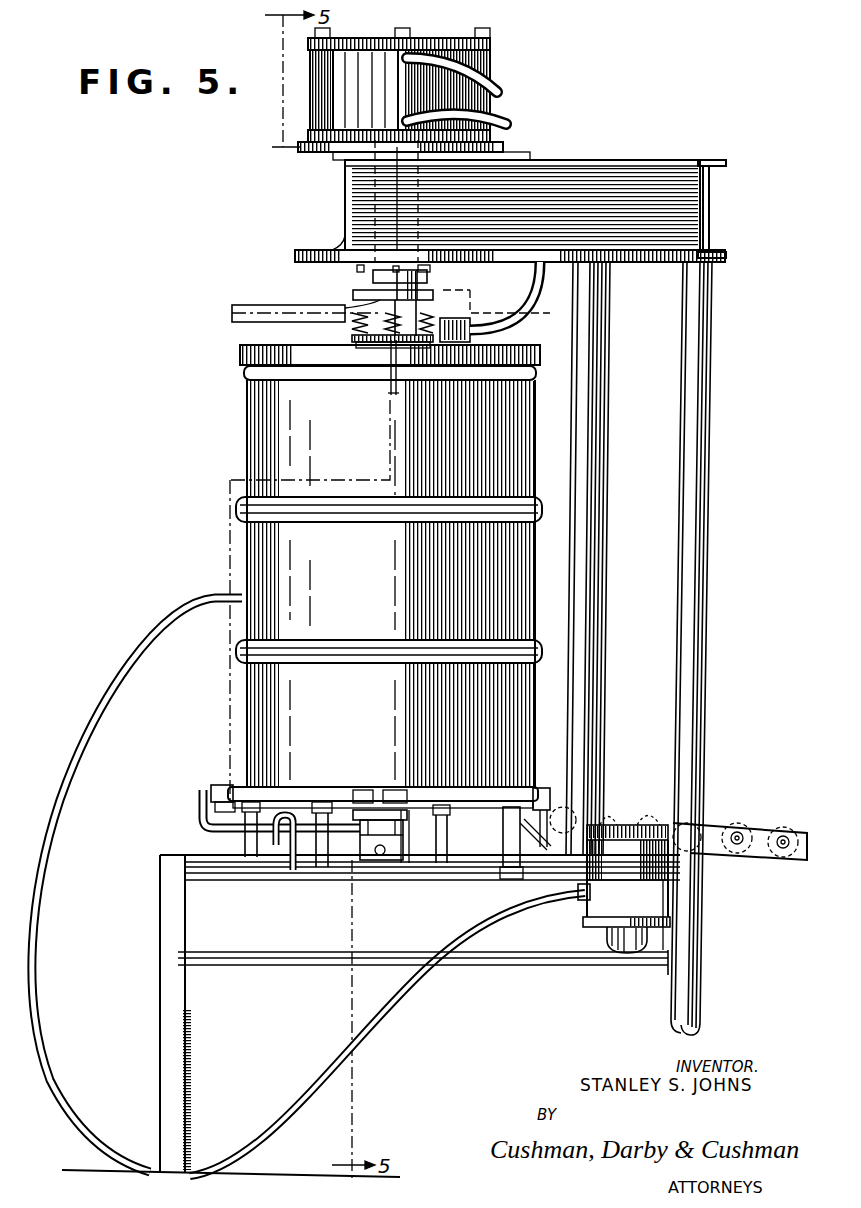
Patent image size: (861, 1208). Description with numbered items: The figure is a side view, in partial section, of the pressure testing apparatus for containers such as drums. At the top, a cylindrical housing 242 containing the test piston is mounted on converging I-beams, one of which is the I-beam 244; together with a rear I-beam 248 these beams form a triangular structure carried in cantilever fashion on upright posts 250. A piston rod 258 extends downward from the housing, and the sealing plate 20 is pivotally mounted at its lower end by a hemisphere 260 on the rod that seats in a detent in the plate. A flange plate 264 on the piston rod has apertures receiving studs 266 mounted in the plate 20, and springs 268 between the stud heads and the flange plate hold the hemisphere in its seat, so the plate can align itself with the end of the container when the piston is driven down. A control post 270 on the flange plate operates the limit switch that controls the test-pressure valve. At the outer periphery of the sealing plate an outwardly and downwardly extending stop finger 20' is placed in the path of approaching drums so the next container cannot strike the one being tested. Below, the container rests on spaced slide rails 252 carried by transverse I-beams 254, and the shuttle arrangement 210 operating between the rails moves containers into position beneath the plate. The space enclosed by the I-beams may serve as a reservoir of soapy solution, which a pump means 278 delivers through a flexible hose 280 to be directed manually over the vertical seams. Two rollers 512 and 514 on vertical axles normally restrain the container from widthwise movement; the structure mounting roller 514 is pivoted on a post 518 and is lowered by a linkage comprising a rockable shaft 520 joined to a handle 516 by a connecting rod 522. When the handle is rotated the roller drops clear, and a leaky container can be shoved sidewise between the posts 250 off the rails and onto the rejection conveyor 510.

The cylindrical housing 242 is at (420, 40).
The converging I-beam 244 is at (560, 160).
The rear I-beam 248 is at (713, 206).
The posts 250 is at (608, 410).
The sealing plate 20 is at (401, 565).
The stop finger 20' is at (410, 400).
The piston rod 258 is at (377, 281).
The flange plate 264 is at (378, 299).
The studs 266 is at (345, 314).
The springs 268 is at (352, 328).
The control post 270 is at (418, 292).
The hemisphere 260 is at (391, 352).
The flexible hose 280 is at (113, 690).
The roller 512 is at (217, 784).
The handle 516 is at (198, 810).
The post 518 is at (529, 786).
The roller 514 is at (547, 788).
The slide rails 252 is at (505, 838).
The rejection conveyor 510 is at (730, 806).
The pump means 278 is at (664, 865).
The connecting rod 522 is at (283, 852).
The shuttle arrangement 210 is at (348, 842).
The rockable shaft 520 is at (440, 872).
The transverse I-beams 254 is at (283, 966).